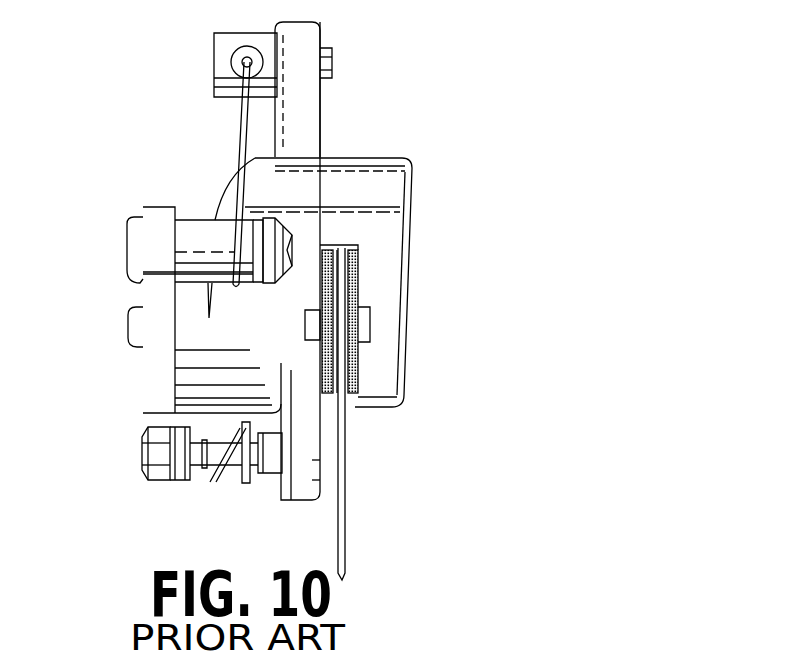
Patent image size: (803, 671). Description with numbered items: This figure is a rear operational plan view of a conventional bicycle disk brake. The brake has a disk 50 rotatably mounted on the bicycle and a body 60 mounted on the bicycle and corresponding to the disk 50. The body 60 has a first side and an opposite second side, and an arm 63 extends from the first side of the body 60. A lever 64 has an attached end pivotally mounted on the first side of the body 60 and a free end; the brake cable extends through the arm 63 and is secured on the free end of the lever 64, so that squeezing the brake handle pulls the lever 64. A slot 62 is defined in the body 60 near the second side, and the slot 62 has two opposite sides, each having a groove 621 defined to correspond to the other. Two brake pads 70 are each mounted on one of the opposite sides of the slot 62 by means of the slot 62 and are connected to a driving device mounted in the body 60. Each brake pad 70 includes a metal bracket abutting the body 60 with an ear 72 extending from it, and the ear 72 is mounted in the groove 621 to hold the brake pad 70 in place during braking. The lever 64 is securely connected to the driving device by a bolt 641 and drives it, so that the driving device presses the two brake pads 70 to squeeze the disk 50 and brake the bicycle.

The disk 50 is at (338, 535).
The body 60 is at (377, 132).
The slot 62 is at (350, 397).
The groove 621 is at (316, 318).
The arm 63 is at (310, 40).
The lever 64 is at (155, 300).
The bolt 641 is at (130, 340).
The brake pad 70 is at (325, 267).
The ear 72 is at (313, 325).